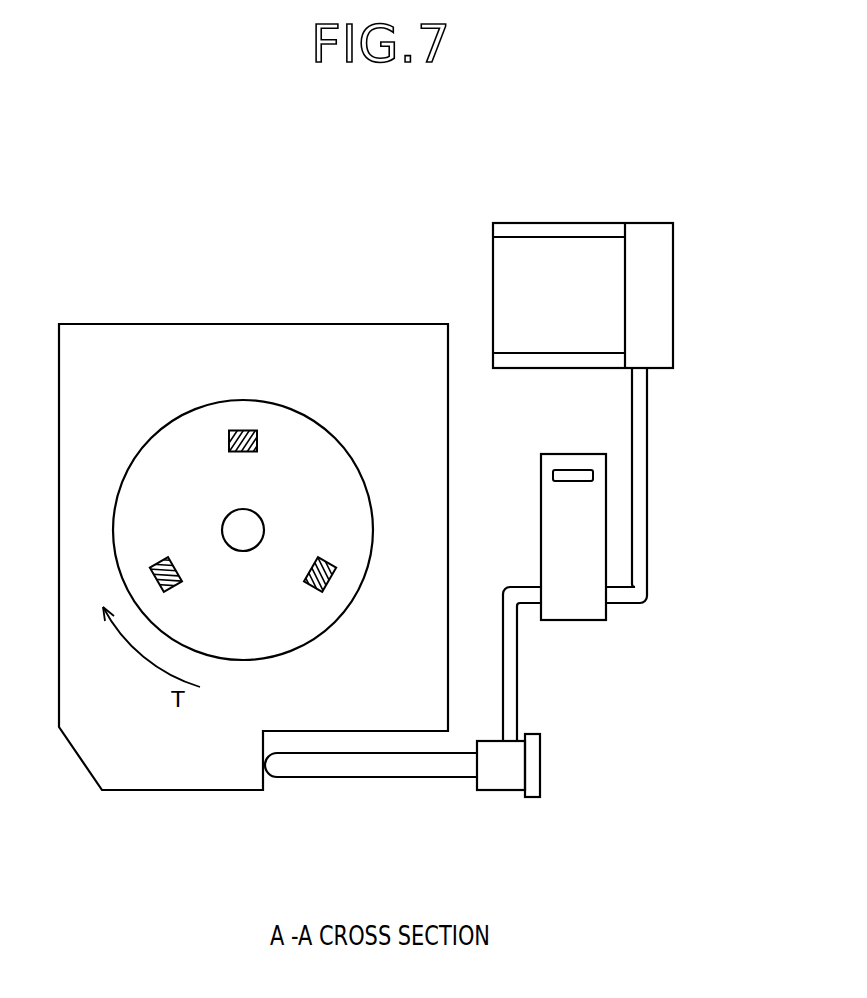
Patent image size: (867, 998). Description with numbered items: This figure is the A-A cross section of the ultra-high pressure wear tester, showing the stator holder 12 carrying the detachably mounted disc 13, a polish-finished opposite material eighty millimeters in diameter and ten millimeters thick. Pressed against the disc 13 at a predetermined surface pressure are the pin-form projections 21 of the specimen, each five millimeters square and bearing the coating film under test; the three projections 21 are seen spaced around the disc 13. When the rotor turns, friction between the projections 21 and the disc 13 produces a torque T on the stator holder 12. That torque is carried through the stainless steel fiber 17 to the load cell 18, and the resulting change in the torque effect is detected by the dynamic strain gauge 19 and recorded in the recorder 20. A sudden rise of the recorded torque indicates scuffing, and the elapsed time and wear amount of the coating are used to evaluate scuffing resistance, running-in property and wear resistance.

The stator holder 12 is at (116, 324).
The disc 13 is at (195, 409).
The pin-form projections 21 is at (258, 442).
The stainless steel fiber 17 is at (345, 778).
The load cell 18 is at (497, 791).
The dynamic strain gauge 19 is at (600, 621).
The recorder 20 is at (560, 223).